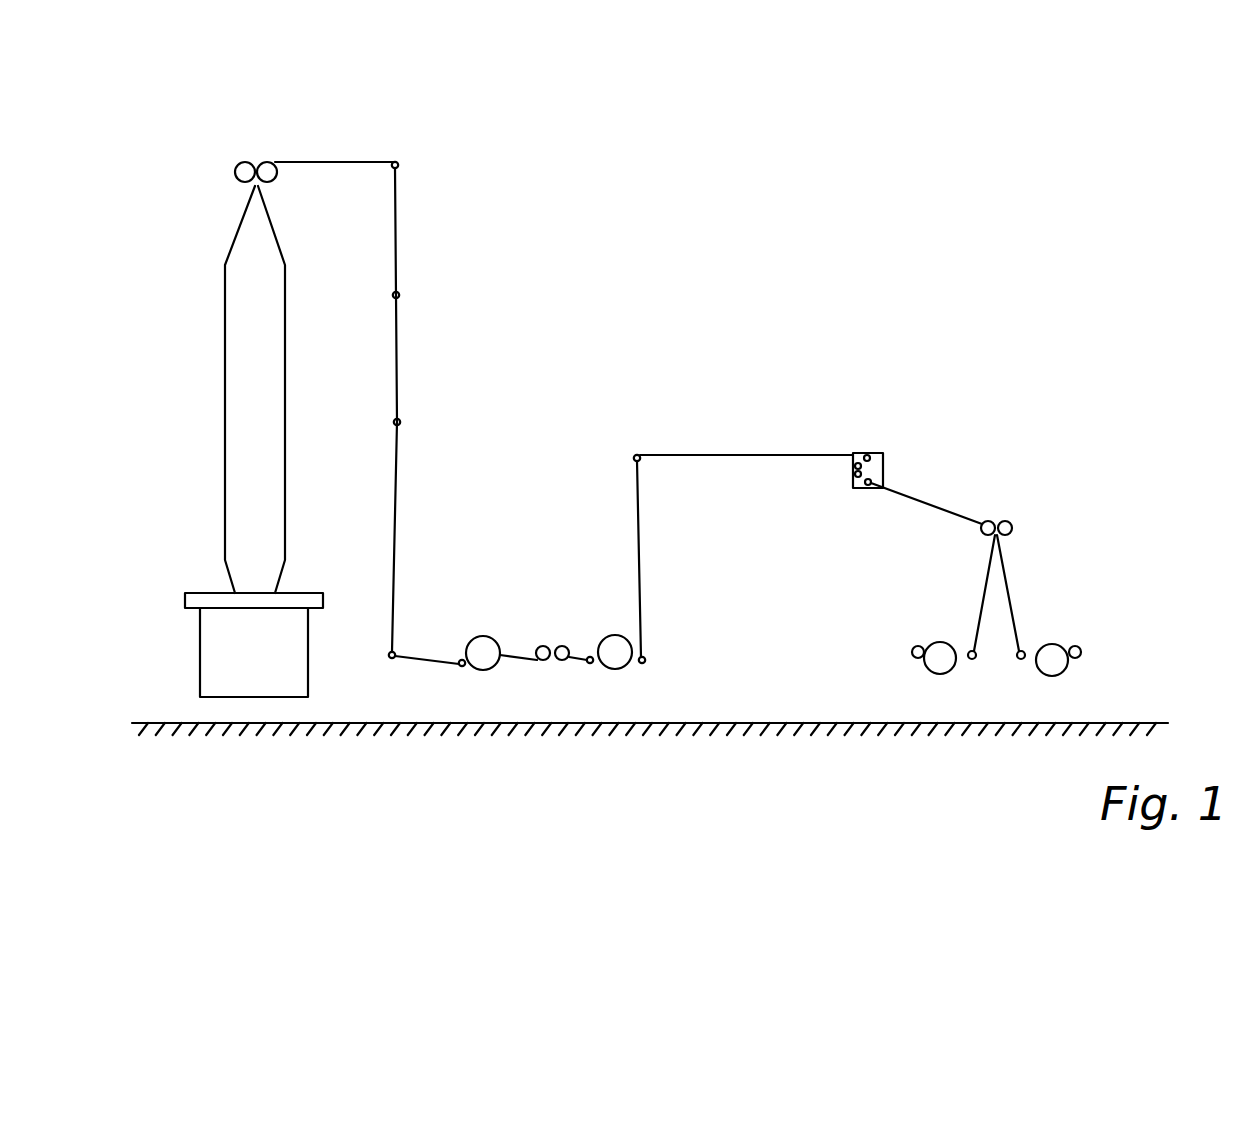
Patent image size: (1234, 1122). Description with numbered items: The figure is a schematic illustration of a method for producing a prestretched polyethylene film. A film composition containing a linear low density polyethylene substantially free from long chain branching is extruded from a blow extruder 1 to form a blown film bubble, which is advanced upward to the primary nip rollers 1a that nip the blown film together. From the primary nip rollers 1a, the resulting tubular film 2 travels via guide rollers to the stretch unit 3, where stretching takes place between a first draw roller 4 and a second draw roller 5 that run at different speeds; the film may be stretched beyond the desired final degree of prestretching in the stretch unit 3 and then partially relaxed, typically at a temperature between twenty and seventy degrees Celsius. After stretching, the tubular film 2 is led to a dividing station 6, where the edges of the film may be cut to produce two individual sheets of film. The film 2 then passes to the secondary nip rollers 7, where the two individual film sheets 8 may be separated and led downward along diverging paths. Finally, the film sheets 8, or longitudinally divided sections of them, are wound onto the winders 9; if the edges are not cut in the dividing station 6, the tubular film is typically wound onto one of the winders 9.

The blow extruder 1 is at (200, 645).
The primary nip rollers 1a is at (238, 162).
The tubular film 2 is at (397, 262).
The stretch unit 3 is at (593, 565).
The first draw roller 4 is at (483, 660).
The second draw roller 5 is at (615, 660).
The dividing station 6 is at (856, 481).
The secondary nip rollers 7 is at (1013, 525).
The film sheets 8 is at (985, 587).
The winders 9 is at (940, 666).